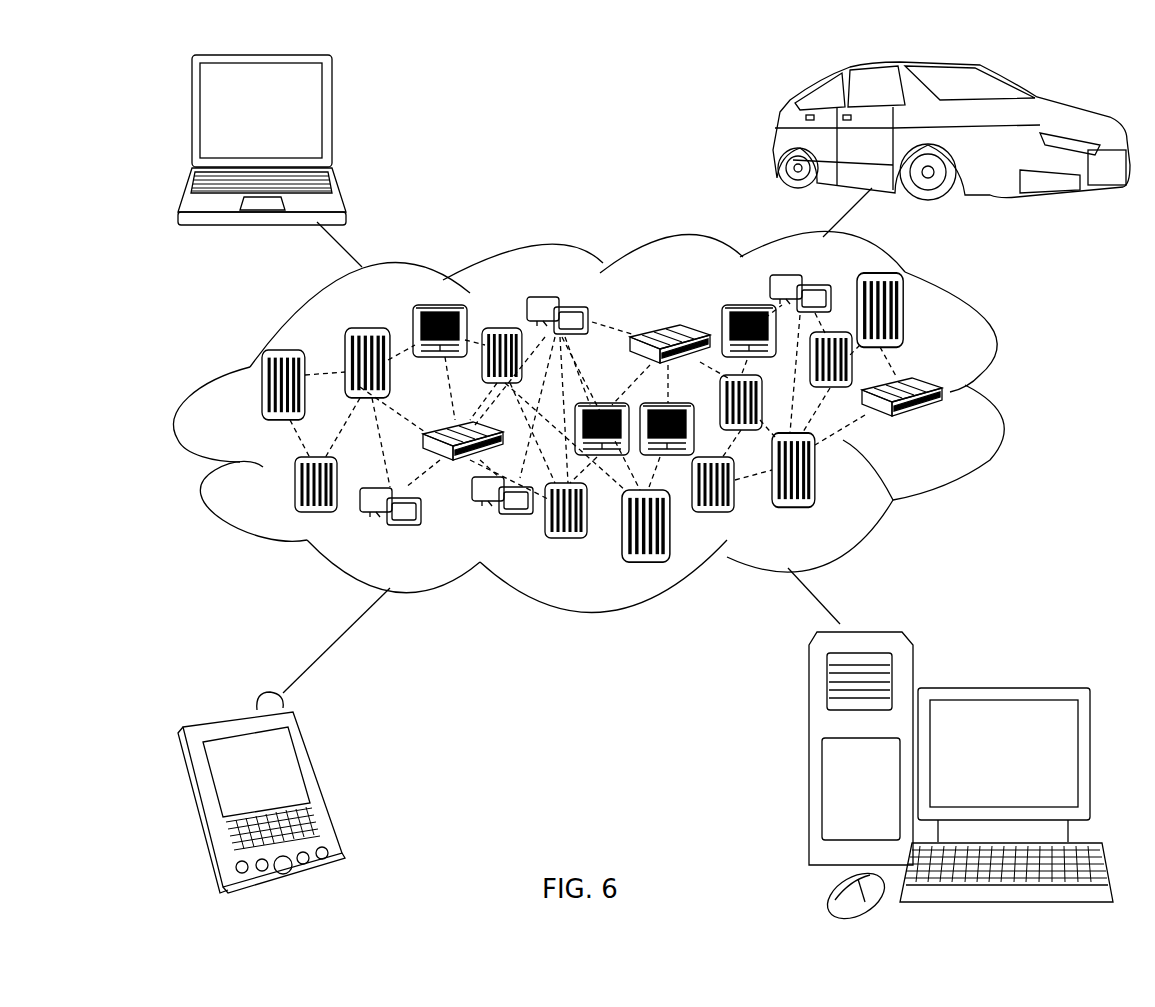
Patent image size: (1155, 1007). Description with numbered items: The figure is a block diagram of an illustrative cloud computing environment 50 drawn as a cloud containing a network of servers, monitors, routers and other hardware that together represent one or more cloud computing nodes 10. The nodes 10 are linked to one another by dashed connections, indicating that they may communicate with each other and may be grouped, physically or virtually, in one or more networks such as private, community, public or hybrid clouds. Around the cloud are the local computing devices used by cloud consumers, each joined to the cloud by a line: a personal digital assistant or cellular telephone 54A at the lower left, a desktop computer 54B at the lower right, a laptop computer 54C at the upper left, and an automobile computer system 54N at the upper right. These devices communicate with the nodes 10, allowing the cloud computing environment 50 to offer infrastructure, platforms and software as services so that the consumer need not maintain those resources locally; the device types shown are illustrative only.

The cloud computing nodes 10 is at (950, 430).
The cloud computing environment 50 is at (1000, 393).
The personal digital assistant or cellular telephone 54A is at (322, 786).
The desktop computer 54B is at (1000, 687).
The laptop computer 54C is at (335, 118).
The automobile computer system 54N is at (777, 133).